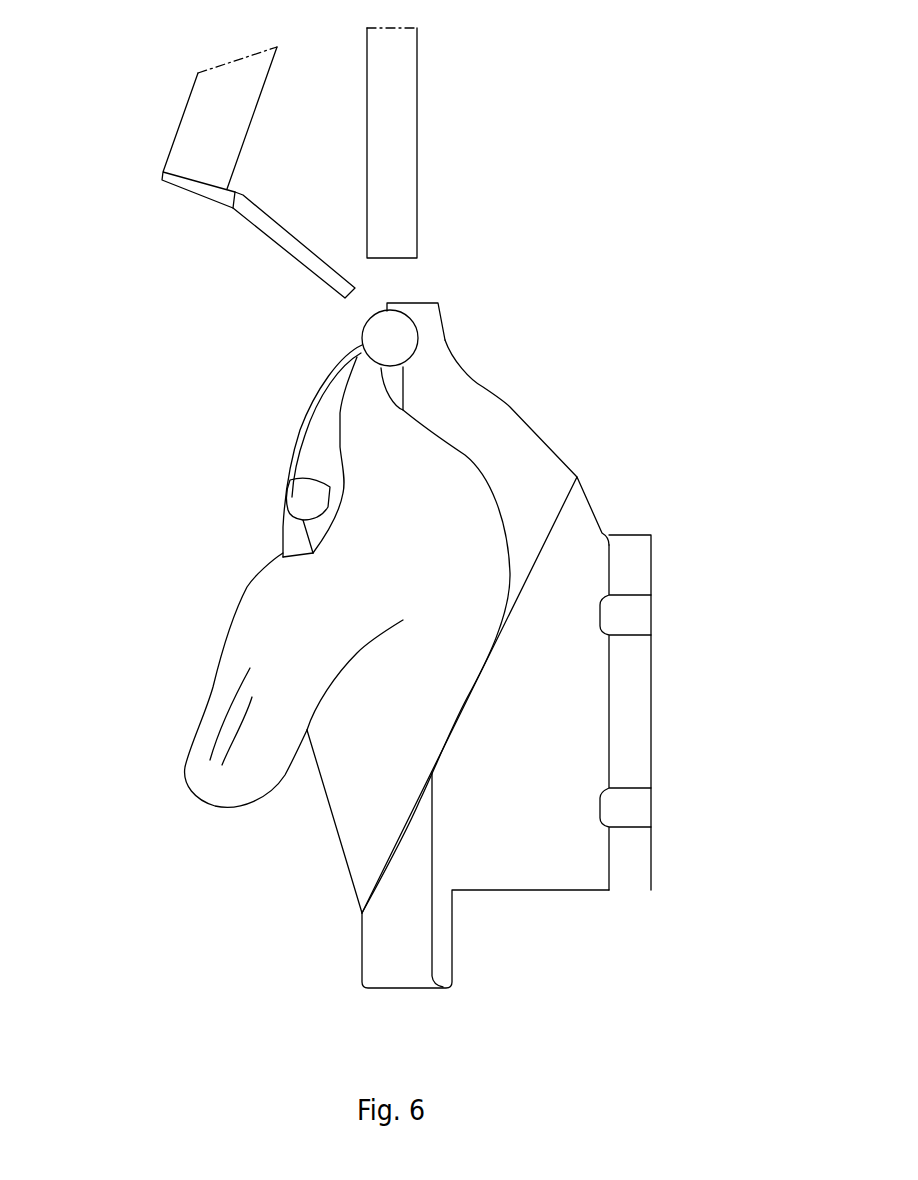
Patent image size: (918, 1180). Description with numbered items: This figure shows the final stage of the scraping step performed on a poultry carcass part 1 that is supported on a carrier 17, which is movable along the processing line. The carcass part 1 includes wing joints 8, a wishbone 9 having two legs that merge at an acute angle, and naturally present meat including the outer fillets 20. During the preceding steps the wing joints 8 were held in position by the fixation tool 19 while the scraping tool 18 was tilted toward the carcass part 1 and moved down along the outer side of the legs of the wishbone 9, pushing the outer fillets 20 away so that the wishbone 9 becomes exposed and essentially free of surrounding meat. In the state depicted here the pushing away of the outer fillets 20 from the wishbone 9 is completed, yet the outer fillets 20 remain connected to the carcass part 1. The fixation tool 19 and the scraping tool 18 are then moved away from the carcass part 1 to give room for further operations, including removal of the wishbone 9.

The carcass part 1 is at (295, 833).
The wing joints 8 is at (428, 320).
The wishbone 9 is at (275, 456).
The carrier 17 is at (625, 715).
The scraping tool 18 is at (164, 136).
The fixation tool 19 is at (430, 105).
The outer fillets 20 is at (172, 765).